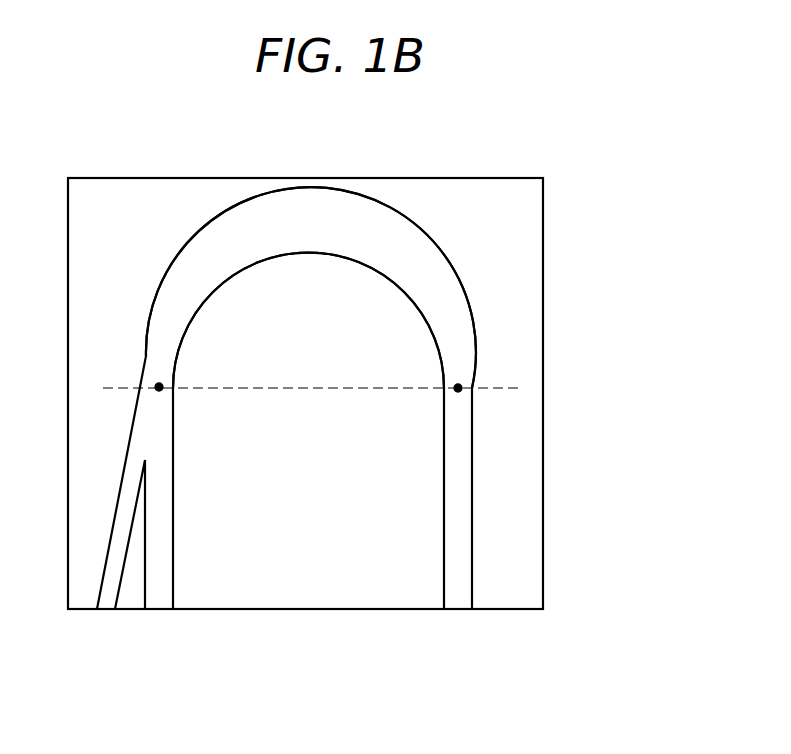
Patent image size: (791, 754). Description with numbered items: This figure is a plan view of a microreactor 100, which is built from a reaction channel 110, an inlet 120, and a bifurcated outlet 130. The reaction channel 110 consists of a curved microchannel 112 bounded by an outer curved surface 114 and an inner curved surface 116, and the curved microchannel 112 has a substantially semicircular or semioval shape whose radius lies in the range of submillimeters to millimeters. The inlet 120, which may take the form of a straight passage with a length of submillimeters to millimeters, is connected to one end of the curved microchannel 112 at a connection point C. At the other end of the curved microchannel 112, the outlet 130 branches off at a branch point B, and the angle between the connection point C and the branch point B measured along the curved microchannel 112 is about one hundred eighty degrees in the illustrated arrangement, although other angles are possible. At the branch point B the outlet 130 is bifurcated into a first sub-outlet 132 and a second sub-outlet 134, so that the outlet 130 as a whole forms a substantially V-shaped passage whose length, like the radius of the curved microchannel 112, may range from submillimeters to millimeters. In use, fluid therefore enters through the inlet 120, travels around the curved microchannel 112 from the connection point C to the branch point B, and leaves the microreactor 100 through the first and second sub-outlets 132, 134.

The microreactor 100 is at (336, 142).
The reaction channel 110 is at (399, 398).
The curved microchannel 112 is at (448, 266).
The outer curved surface 114 is at (452, 305).
The inner curved surface 116 is at (442, 355).
The inlet 120 is at (474, 537).
The bifurcated outlet 130 is at (129, 562).
The first sub-outlet 132 is at (157, 588).
The second sub-outlet 134 is at (108, 595).
The branch point B is at (158, 387).
The connection point C is at (458, 388).